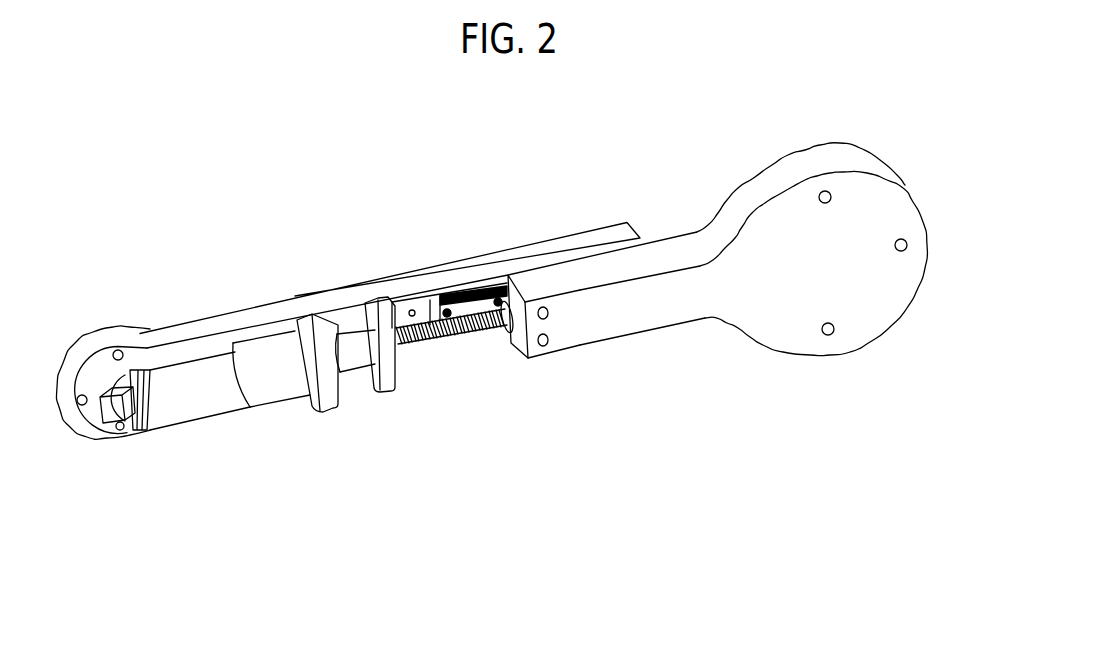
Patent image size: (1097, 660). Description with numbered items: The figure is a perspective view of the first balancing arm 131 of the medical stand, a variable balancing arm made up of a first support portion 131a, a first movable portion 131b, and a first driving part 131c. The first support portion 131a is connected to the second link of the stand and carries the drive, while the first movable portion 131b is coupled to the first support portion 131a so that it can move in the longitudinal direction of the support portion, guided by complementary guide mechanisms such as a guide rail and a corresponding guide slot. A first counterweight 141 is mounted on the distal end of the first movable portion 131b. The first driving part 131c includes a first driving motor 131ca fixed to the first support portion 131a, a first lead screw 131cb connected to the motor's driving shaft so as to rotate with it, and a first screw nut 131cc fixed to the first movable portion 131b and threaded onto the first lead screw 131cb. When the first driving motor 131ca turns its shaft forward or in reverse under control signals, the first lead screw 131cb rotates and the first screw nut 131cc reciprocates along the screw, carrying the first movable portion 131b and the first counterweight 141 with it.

The first balancing arm 131 is at (367, 180).
The first support portion 131a is at (143, 353).
The first movable portion 131b is at (658, 318).
The first driving part 131c is at (581, 538).
The first driving motor 131ca is at (280, 393).
The first lead screw 131cb is at (435, 340).
The first screw nut 131cc is at (512, 345).
The first counterweight 141 is at (867, 323).